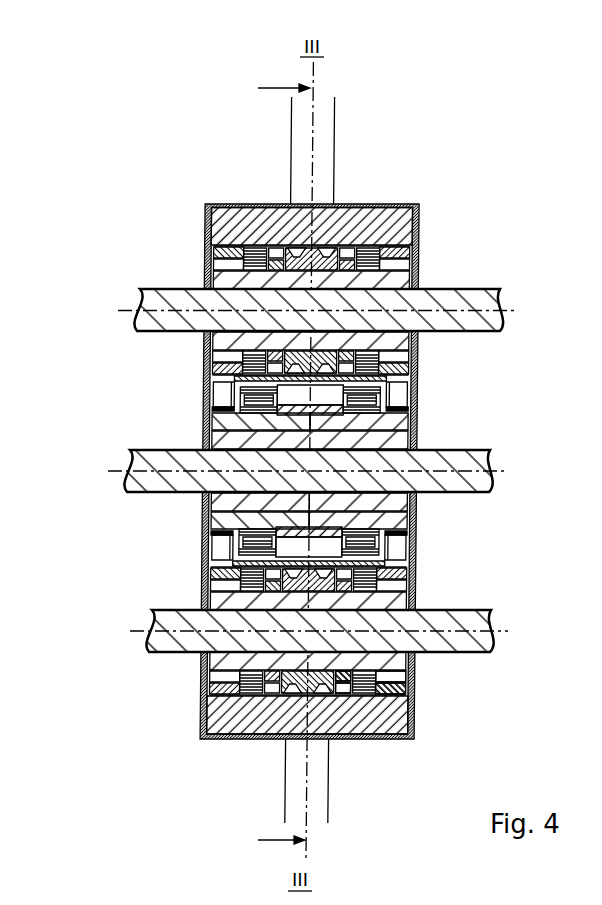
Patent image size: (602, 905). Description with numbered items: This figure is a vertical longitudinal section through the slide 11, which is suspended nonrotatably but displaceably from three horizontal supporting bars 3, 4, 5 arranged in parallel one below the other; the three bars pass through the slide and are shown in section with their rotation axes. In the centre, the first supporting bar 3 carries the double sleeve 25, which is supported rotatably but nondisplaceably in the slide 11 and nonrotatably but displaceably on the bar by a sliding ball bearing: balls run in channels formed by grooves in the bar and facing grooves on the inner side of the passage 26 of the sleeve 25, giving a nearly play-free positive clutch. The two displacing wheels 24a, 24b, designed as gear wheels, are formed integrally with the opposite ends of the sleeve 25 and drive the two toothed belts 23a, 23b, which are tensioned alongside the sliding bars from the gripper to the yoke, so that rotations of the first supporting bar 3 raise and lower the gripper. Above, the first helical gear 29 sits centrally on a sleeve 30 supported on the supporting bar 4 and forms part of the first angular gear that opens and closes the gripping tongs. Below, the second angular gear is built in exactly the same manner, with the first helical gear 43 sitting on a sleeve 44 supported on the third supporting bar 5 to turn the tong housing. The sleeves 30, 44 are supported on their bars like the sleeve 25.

The first supporting bar 3 is at (478, 465).
The second supporting bar 4 is at (482, 303).
The third supporting bar 5 is at (480, 627).
The slide 11 is at (421, 222).
The belt 23a is at (209, 541).
The belt 23b is at (418, 397).
The displacing wheel 24a is at (210, 418).
The displacing wheel 24b is at (417, 420).
The double sleeve 25 is at (207, 508).
The passage 26 is at (417, 506).
The first helical gear 29 is at (364, 205).
The sleeve 30 is at (421, 262).
The first helical gear 43 is at (340, 694).
The sleeve 44 is at (419, 689).